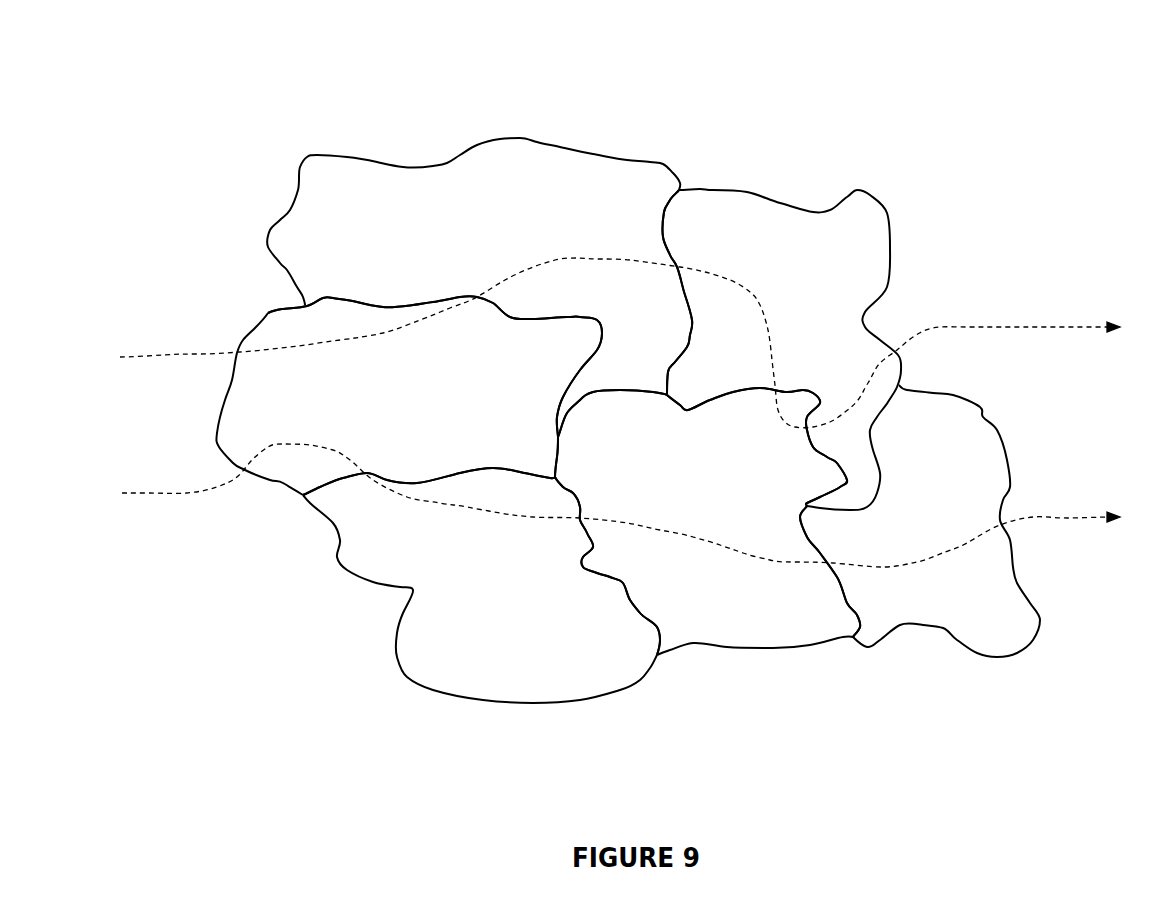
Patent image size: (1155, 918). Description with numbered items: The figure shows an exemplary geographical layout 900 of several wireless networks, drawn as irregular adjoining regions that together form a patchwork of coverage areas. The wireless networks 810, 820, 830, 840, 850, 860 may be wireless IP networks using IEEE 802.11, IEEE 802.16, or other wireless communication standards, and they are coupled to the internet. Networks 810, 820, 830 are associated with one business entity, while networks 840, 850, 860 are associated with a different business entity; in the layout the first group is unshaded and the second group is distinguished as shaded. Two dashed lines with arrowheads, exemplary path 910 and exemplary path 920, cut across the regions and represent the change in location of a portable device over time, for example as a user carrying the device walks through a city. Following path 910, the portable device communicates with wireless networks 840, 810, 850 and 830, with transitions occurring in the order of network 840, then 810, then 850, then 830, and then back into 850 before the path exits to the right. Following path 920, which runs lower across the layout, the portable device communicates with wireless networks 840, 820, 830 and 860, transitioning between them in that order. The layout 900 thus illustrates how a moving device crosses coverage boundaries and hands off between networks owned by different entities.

The geographical layout 900 is at (655, 34).
The wireless network 810 is at (452, 230).
The wireless network 820 is at (522, 601).
The wireless network 830 is at (718, 511).
The wireless network 840 is at (388, 405).
The wireless network 850 is at (772, 305).
The wireless network 860 is at (937, 533).
The exemplary path 910 is at (163, 353).
The exemplary path 920 is at (185, 492).